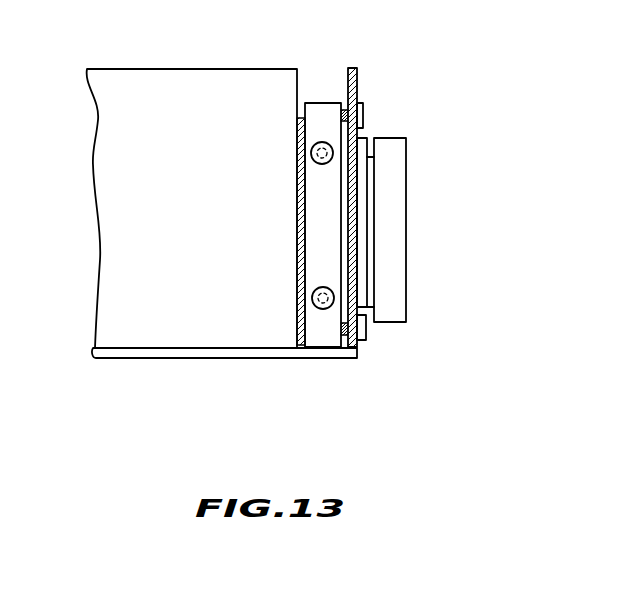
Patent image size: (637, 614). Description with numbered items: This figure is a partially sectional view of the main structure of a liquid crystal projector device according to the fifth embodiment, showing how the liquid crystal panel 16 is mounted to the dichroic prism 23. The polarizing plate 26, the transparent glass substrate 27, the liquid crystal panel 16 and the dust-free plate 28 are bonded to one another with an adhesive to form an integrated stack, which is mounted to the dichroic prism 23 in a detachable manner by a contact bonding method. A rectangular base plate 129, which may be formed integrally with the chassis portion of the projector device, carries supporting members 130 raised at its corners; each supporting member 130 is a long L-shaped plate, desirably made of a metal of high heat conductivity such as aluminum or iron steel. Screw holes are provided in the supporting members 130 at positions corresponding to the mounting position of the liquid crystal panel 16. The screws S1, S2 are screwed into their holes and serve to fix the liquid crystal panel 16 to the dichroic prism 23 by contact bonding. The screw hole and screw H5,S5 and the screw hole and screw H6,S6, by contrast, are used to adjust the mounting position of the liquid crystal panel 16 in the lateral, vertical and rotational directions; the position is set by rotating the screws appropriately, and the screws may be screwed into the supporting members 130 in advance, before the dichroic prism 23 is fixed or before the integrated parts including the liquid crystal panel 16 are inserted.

The dichroic prism 23 is at (197, 77).
The base plate 129 is at (243, 360).
The polarizing plate 26 is at (298, 192).
The transparent glass substrate 27 is at (330, 104).
The supporting member 130 is at (354, 88).
The screw S1 is at (363, 118).
The screw S2 is at (367, 335).
The liquid crystal panel 16 is at (368, 245).
The dust-free plate 28 is at (400, 198).
The screw hole and screw H5,S5 is at (322, 142).
The screw hole and screw H6,S6 is at (323, 309).